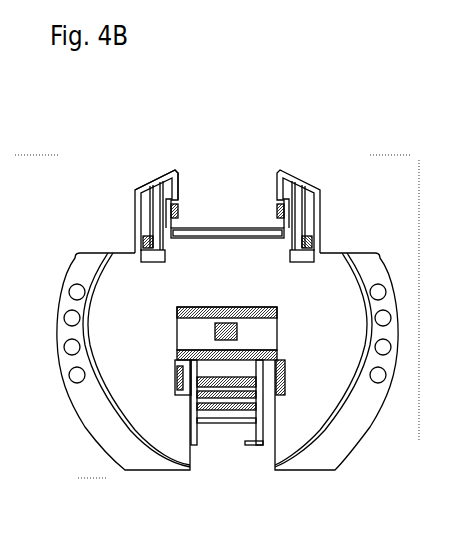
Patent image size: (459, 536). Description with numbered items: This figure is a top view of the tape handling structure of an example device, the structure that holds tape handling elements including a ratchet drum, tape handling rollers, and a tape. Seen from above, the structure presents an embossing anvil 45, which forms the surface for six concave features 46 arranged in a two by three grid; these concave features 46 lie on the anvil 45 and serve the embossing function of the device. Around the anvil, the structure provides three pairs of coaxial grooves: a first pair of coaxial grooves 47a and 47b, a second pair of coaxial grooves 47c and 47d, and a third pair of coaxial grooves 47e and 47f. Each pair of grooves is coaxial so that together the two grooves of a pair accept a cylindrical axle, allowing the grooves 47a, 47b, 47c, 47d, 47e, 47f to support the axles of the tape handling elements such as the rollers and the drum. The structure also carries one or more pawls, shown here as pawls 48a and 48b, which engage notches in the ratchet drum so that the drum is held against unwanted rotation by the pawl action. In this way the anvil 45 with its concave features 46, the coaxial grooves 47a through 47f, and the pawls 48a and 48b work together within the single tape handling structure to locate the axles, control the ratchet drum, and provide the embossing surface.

The embossing anvil 45 is at (177, 333).
The concave features 46 is at (277, 338).
The coaxial groove 47a is at (178, 200).
The coaxial groove 47b is at (227, 209).
The coaxial groove 47c is at (133, 248).
The coaxial groove 47d is at (320, 250).
The coaxial groove 47e is at (160, 340).
The coaxial groove 47f is at (277, 340).
The pawl 48a is at (133, 220).
The pawl 48b is at (320, 215).